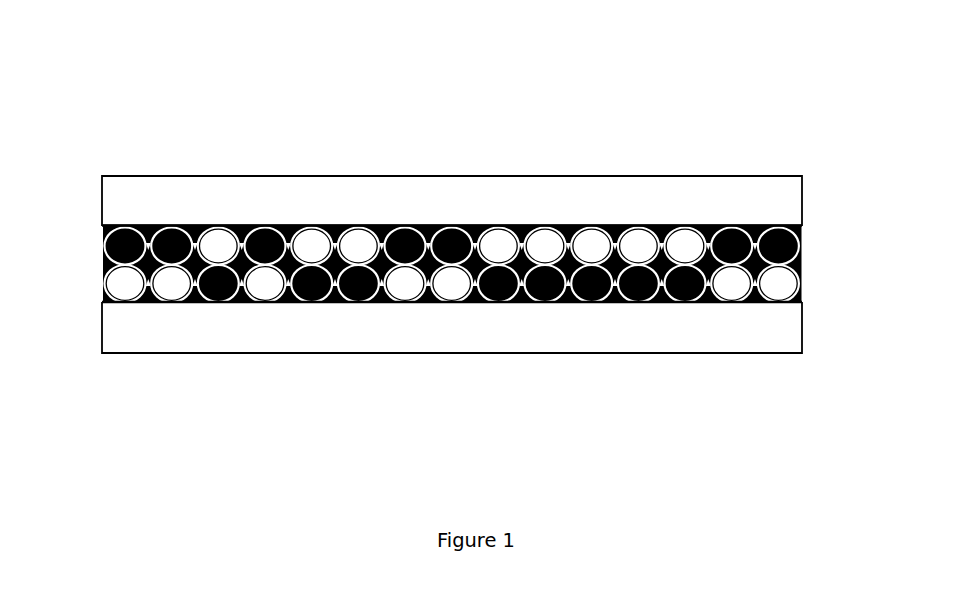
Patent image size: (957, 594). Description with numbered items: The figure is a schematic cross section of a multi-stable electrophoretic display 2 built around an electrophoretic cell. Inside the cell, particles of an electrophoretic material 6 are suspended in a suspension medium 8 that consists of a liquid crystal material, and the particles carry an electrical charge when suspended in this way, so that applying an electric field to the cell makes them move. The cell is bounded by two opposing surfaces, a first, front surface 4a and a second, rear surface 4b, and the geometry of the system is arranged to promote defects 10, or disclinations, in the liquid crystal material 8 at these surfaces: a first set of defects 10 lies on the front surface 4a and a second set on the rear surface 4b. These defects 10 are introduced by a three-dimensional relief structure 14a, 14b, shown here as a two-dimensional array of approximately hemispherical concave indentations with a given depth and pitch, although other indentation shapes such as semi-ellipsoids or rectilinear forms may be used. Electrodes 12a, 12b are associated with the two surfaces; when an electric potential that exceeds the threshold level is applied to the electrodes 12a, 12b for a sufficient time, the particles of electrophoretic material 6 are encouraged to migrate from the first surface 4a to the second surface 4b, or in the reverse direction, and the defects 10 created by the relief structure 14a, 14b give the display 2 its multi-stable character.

The electrophoretic display 2 is at (116, 65).
The first (front) surface 4a is at (225, 198).
The second (rear) surface 4b is at (558, 337).
The particles of electrophoretic material 6 is at (170, 285).
The suspension medium 8 is at (497, 283).
The defects 10 is at (350, 305).
The electrode 12a is at (710, 226).
The electrode 12b is at (755, 303).
The relief structure 14a is at (428, 232).
The relief structure 14b is at (427, 297).